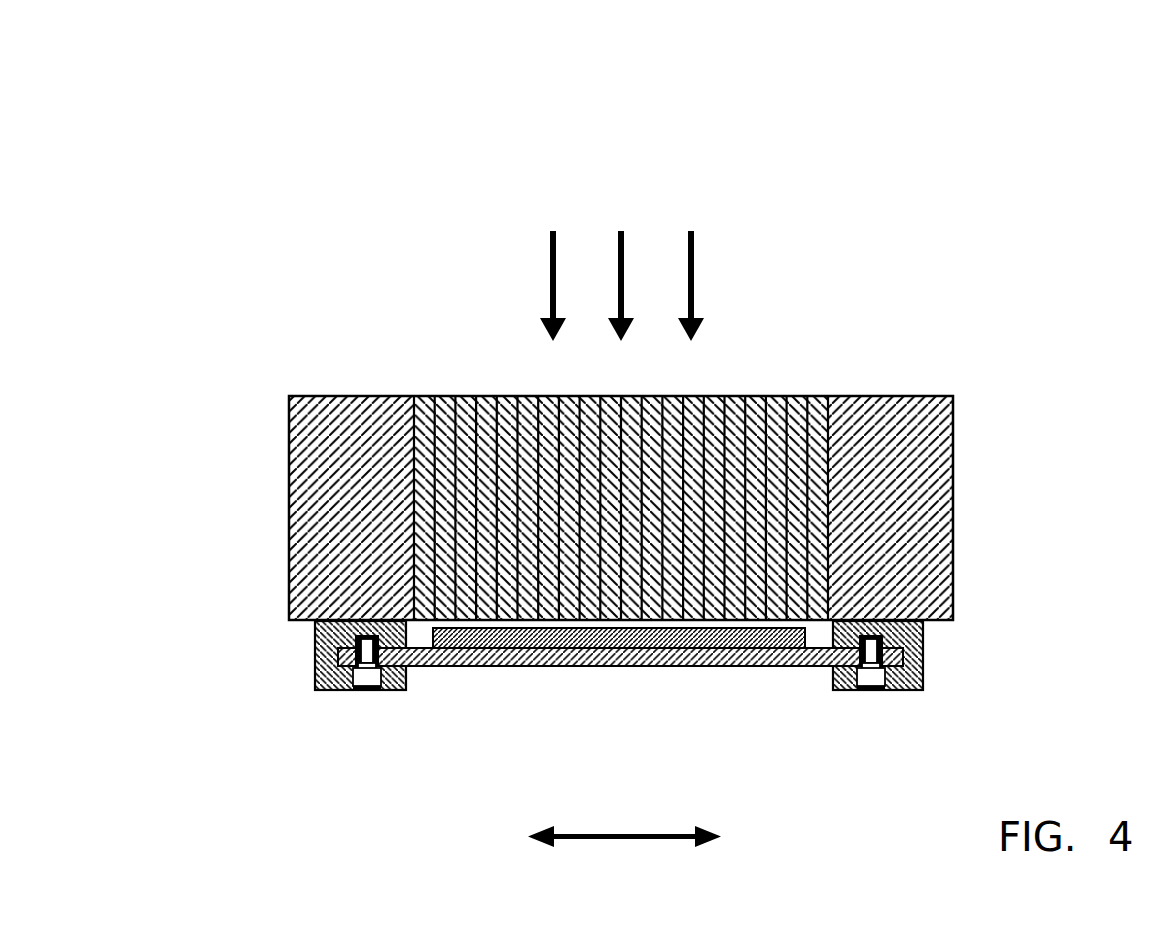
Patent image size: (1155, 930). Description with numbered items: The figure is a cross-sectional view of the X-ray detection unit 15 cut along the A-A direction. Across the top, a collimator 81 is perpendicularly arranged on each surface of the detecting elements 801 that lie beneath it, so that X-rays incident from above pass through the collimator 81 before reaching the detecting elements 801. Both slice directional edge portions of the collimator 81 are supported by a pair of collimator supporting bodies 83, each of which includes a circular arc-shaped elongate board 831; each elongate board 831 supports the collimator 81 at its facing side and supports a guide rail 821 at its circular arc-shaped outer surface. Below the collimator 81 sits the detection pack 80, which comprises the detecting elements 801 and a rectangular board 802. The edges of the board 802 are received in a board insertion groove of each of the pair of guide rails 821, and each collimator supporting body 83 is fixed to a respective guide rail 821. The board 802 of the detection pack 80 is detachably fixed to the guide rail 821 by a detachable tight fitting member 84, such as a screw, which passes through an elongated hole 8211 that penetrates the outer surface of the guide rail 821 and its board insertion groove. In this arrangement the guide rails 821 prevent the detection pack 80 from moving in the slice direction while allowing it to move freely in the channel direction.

The X-ray detection unit 15 is at (488, 125).
The collimator 81 is at (757, 403).
The collimator supporting body 83 is at (608, 463).
The elongate board 831 is at (307, 470).
The detection pack 80 is at (620, 688).
The detecting element 801 is at (437, 643).
The board 802 is at (423, 660).
The guide rail 821 is at (307, 636).
The elongated hole 8211 is at (347, 685).
The tight fitting member 84 is at (367, 683).